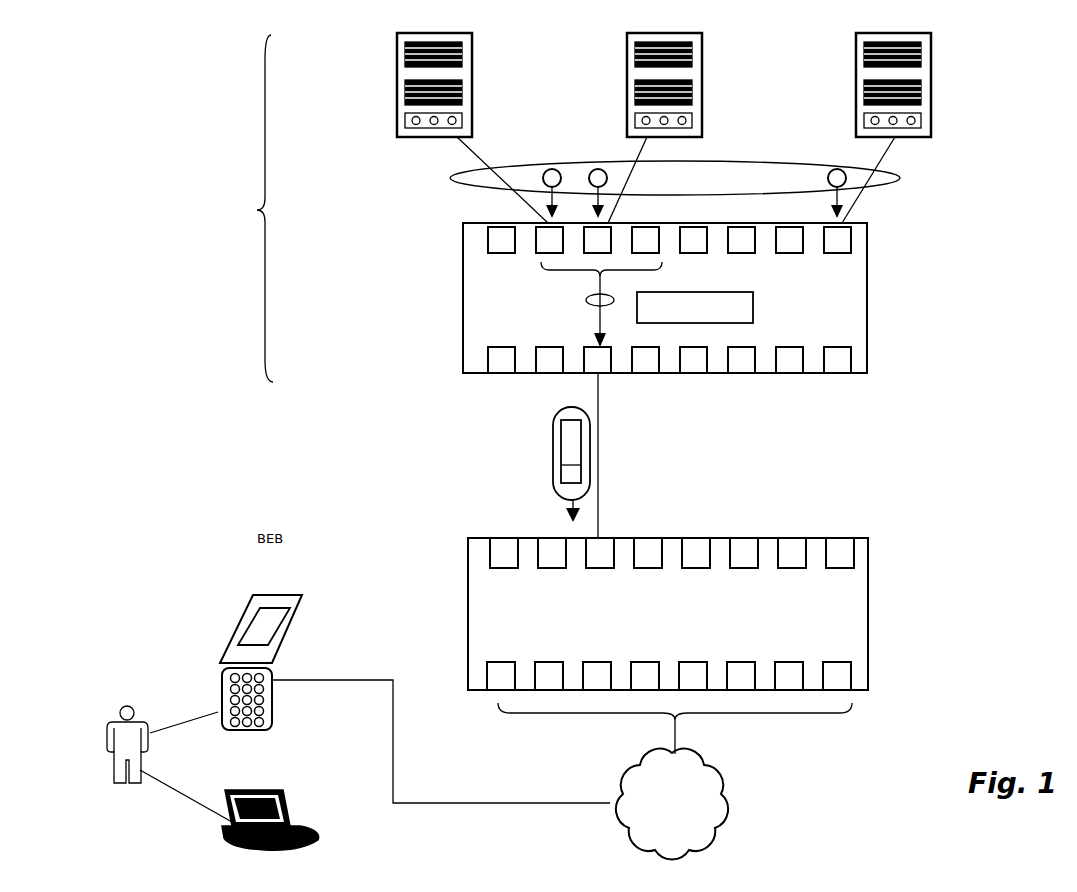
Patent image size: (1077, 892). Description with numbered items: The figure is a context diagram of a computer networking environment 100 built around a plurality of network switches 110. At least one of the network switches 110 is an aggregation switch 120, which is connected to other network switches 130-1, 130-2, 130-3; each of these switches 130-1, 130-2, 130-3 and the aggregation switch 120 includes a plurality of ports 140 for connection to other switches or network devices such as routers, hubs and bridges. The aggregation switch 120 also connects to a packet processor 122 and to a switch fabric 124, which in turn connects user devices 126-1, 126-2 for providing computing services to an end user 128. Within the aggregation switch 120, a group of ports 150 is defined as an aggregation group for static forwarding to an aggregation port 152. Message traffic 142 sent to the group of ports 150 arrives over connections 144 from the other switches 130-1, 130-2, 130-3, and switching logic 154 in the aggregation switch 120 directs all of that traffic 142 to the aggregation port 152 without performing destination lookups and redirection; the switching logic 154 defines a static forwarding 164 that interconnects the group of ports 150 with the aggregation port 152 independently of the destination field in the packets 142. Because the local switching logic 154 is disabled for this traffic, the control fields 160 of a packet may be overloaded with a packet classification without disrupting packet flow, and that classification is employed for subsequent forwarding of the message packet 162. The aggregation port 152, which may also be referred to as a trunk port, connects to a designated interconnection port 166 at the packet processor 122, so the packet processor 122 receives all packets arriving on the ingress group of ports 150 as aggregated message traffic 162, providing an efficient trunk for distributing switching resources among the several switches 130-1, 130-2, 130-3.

The environment 100 is at (198, 455).
The network switches 110 is at (257, 210).
The aggregation switch 120 is at (714, 298).
The packet processor 122 is at (705, 630).
The switch fabric 124 is at (732, 800).
The user device 126-1 is at (300, 598).
The user device 126-2 is at (305, 846).
The end user 128 is at (128, 705).
The network switch 130-1 is at (397, 110).
The network switch 130-2 is at (627, 106).
The network switch 130-3 is at (931, 108).
The ports 140 is at (880, 260).
The message traffic 142 is at (552, 168).
The connections 144 is at (900, 178).
The group of ports 150 is at (543, 268).
The aggregation port 152 is at (596, 375).
The switching logic 154 is at (753, 308).
The control fields 160 is at (528, 464).
The aggregated message traffic 162 is at (554, 453).
The static forwarding 164 is at (587, 300).
The interconnection port 166 is at (600, 538).